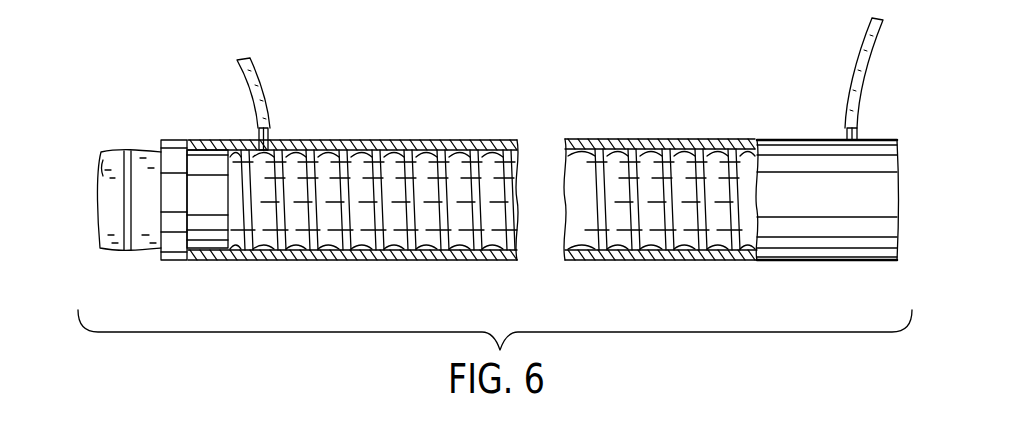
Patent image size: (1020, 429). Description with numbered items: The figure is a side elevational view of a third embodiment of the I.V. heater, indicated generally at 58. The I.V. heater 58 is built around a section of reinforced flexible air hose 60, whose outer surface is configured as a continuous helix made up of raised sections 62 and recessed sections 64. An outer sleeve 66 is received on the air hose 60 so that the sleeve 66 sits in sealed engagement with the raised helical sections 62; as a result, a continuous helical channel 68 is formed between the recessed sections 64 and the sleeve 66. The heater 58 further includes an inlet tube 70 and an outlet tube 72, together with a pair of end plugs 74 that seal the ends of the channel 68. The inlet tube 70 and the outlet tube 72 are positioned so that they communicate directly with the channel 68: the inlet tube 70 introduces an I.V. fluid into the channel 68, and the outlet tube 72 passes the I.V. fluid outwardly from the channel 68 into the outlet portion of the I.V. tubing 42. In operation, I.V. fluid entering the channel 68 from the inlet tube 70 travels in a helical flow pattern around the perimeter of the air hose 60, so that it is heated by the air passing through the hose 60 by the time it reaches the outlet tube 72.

The I.V. tubing 42 is at (264, 83).
The I.V. heater 58 is at (416, 119).
The reinforced flexible air hose 60 is at (462, 170).
The raised helical sections 62 is at (313, 168).
The recessed helical sections 64 is at (302, 142).
The outer sleeve 66 is at (490, 260).
The helical channel 68 is at (422, 149).
The inlet tube 70 is at (256, 133).
The outlet tube 72 is at (858, 133).
The end plugs 74 is at (214, 237).